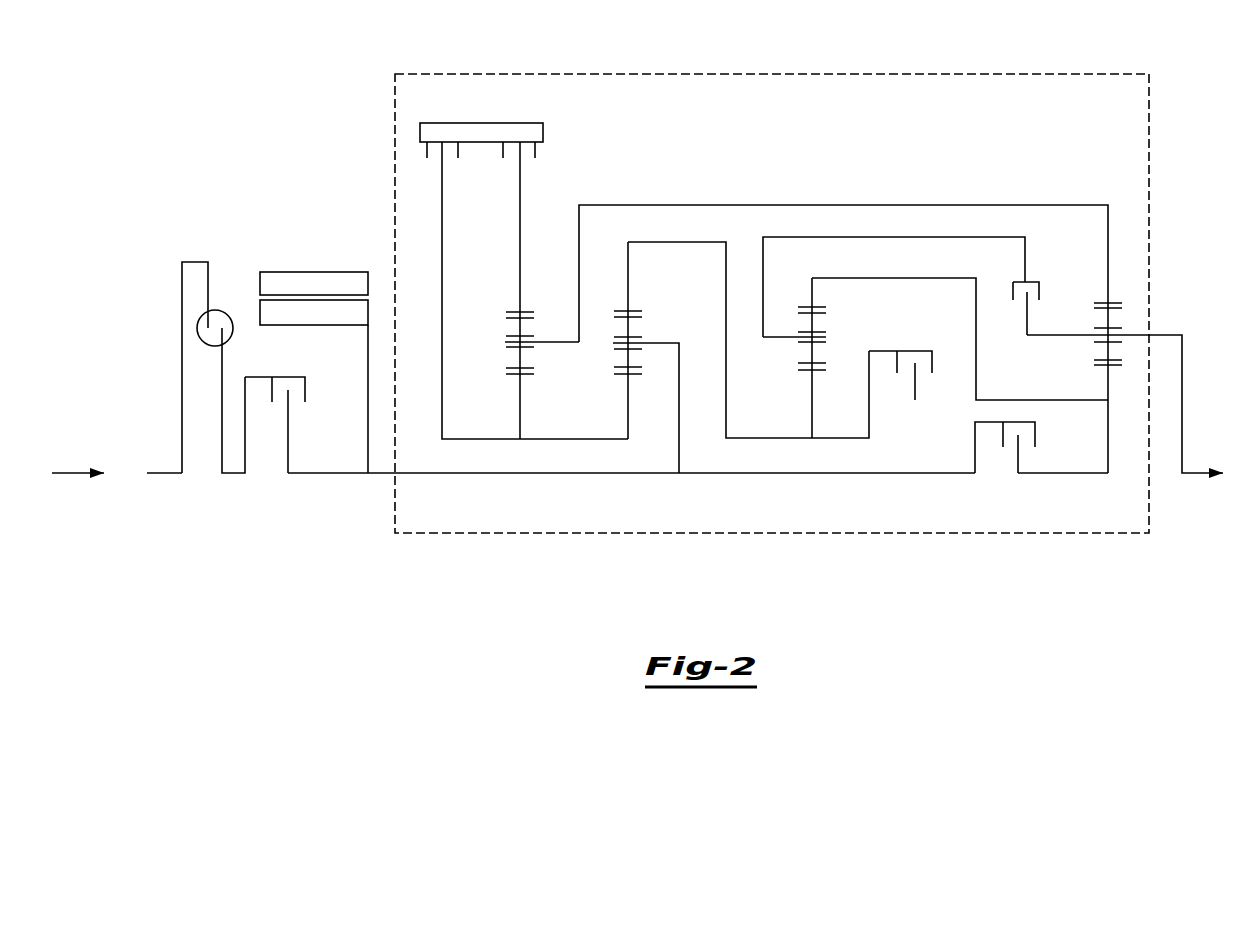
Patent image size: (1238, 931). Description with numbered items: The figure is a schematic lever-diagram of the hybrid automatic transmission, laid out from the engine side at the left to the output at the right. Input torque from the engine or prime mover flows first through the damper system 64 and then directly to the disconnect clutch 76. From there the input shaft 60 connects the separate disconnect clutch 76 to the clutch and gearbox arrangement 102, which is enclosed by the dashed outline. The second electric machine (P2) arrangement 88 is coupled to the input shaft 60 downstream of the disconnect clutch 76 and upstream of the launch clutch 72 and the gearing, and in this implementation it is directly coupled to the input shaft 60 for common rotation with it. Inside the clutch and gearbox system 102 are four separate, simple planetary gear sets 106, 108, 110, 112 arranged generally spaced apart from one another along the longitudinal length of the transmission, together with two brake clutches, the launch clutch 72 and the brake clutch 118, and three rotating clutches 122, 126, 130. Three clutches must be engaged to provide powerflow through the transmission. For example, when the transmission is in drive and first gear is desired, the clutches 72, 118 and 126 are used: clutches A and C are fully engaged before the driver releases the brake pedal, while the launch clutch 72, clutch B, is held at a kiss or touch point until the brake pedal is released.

The clutch and gearbox 102 is at (847, 73).
The input shaft 60 is at (422, 474).
The damper system 64 is at (213, 310).
The disconnect clutch 76 is at (306, 390).
The second electric machine (P2) arrangement/assembly 88 is at (368, 281).
The launch clutch 72 is at (537, 149).
The brake clutch 118 is at (462, 150).
The first planetary gear set 106 is at (548, 362).
The second planetary gear set 108 is at (649, 333).
The third planetary gear set 110 is at (832, 322).
The fourth planetary gear set 112 is at (1090, 314).
The rotating clutch 122 is at (933, 362).
The rotating clutch 130 is at (1013, 292).
The rotating clutch 126 is at (1003, 440).